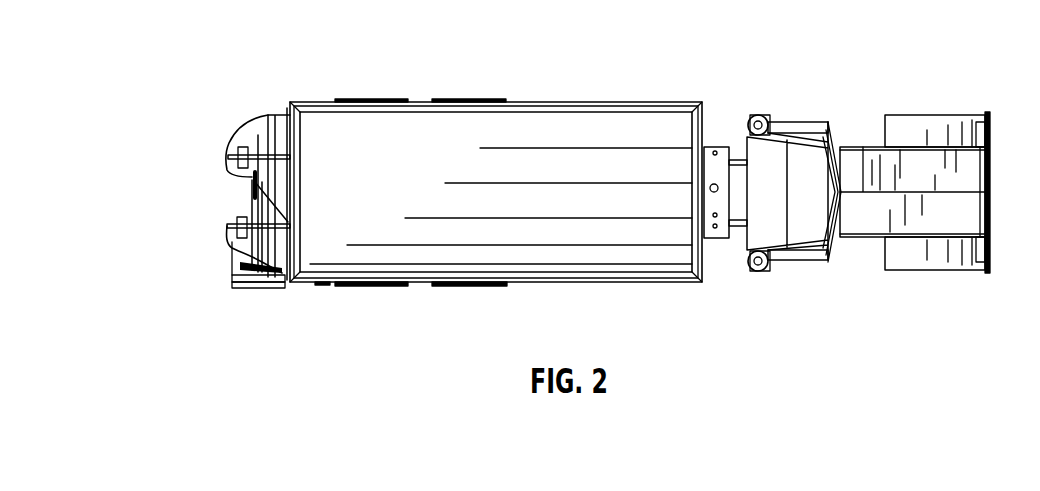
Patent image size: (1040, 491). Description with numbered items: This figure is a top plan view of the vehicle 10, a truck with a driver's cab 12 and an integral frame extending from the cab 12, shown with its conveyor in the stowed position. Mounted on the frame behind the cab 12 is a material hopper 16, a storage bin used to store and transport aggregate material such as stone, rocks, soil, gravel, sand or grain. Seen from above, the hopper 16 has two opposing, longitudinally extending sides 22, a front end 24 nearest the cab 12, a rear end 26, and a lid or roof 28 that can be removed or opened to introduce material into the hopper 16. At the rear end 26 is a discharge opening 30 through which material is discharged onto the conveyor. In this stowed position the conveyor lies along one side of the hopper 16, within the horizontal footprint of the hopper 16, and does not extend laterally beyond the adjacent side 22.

The vehicle 10 is at (694, 34).
The driver's cab 12 is at (798, 120).
The material hopper 16 is at (562, 102).
The longitudinally extending sides 22 is at (415, 102).
The front end 24 is at (705, 265).
The rear end 26 is at (232, 247).
The lid 28 is at (326, 128).
The discharge opening 30 is at (272, 165).